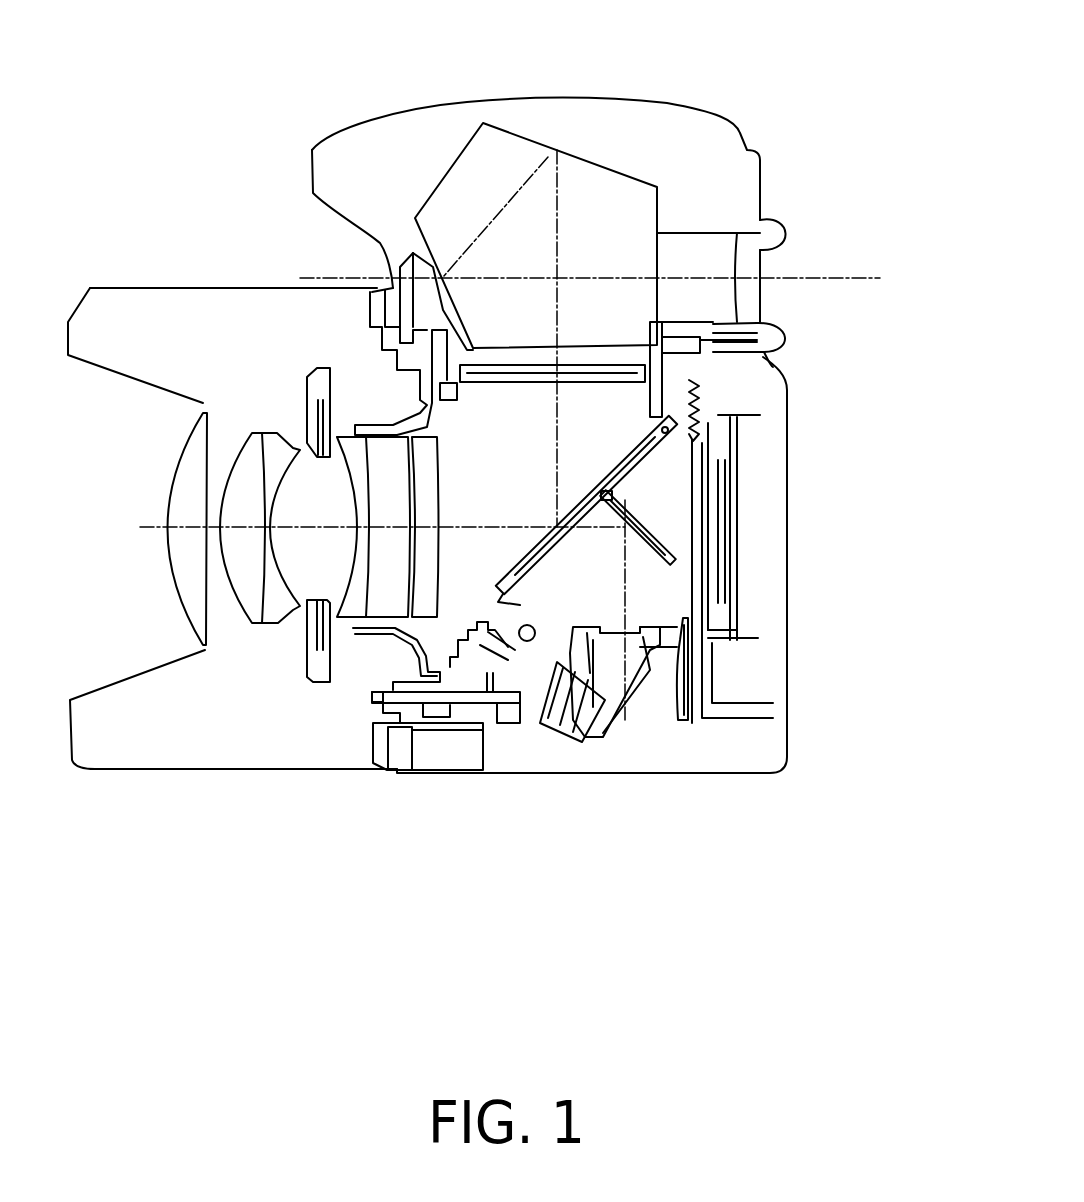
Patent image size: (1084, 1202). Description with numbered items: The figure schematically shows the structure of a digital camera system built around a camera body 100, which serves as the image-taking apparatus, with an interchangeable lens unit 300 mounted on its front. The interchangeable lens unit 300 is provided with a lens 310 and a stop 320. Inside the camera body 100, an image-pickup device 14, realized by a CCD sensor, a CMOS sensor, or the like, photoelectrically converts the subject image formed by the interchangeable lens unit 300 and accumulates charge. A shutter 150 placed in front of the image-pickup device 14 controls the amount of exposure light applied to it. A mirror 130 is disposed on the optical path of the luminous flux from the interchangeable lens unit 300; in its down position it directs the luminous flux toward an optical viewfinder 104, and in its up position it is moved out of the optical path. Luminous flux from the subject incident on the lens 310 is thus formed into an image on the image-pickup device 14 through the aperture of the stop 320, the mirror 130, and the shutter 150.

The image-pickup device 14 is at (740, 513).
The camera body 100 is at (750, 742).
The optical viewfinder 104 is at (588, 180).
The mirror 130 is at (577, 505).
The shutter 150 is at (678, 708).
The interchangeable lens unit 300 is at (225, 732).
The lens 310 is at (187, 570).
The stop 320 is at (301, 682).